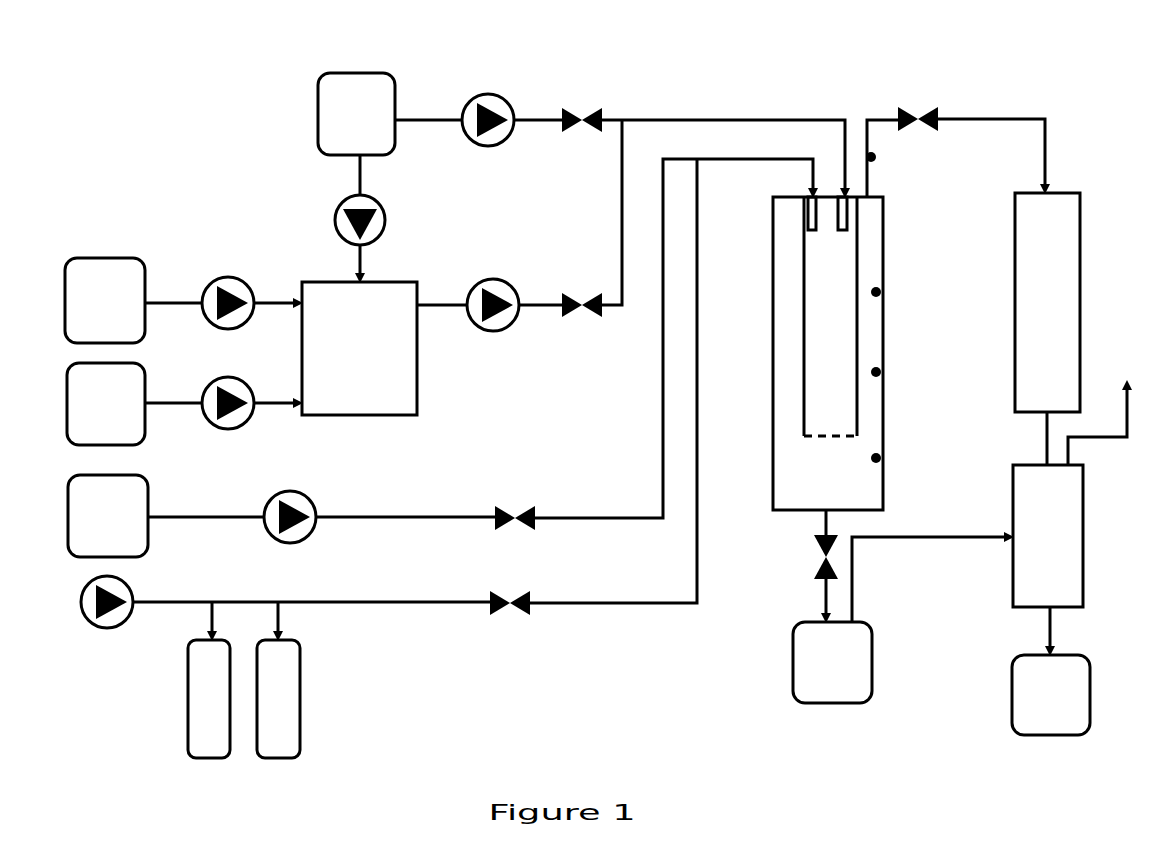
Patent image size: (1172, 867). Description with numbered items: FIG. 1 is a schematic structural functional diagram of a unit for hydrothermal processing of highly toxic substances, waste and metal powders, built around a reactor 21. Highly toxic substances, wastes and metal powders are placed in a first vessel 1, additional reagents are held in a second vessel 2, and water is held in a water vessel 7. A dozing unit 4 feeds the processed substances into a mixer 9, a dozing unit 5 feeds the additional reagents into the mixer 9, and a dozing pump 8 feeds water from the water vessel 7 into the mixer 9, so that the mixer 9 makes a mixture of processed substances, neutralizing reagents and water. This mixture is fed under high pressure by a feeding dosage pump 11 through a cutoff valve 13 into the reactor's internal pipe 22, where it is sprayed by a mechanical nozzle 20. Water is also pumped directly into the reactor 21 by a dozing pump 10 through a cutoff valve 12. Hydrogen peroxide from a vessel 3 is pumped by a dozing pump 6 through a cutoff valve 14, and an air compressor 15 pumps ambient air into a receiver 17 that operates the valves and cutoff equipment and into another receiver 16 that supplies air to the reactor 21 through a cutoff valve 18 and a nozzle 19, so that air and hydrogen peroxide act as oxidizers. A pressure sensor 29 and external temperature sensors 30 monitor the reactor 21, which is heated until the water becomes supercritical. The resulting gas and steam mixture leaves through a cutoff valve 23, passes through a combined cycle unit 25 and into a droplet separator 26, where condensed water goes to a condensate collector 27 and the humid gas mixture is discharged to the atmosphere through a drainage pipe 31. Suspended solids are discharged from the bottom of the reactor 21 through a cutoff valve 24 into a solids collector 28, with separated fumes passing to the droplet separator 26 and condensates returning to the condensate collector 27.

The vessel for processed substances 1 is at (105, 300).
The vessel for additional reagents 2 is at (106, 404).
The vessel with hydrogen peroxide 3 is at (108, 516).
The dozing unit for feeding the processed substances into the mixer 4 is at (215, 280).
The dozing unit for feeding additional reagents into the mixer 5 is at (203, 385).
The dozing pump for feeding hydrogen peroxide into the reactor 6 is at (263, 502).
The vessel for water 7 is at (356, 114).
The dozing pump for feeding water into the mixer 8 is at (327, 217).
The mixer 9 is at (359, 348).
The dozing pump for feeding water into the reactor 10 is at (463, 103).
The dozing unit for feeding the processed substances into the reactor 11 is at (477, 293).
The water supply to the reactor cutoff valve 12 is at (577, 102).
The processed substances and water mixture supply to the reactor cutoff valve 13 is at (583, 293).
The hydrogen peroxide supply to the reactor cutoff valve 14 is at (515, 498).
The air compressor 15 is at (88, 625).
The receiver for supplying compressed air to the reactor 16 is at (209, 680).
The receiver for supplying compressed air to valves and cutoff equipment 17 is at (278, 680).
The compressed air supply to the reactor cutoff valve 18 is at (510, 585).
The nozzle for feeding compressed air and hydrogen peroxide to the reactor 19 is at (808, 227).
The nozzle for feeding processed substances and water mixture to the reactor 20 is at (843, 235).
The reactor 21 is at (775, 470).
The internal pipe of the reactor 22 is at (802, 398).
The gas and steam mixture discharge cutoff valve 23 is at (923, 97).
The suspended solids discharge cutoff valve 24 is at (812, 552).
The combined cycle unit 25 is at (1047, 302).
The droplet separator 26 is at (1048, 536).
The condensate collector 27 is at (1051, 695).
The solids collector 28 is at (832, 662).
The pressure sensor 29 is at (880, 157).
The external temperature sensors 30 is at (880, 458).
The drainage pipe 31 is at (1104, 405).